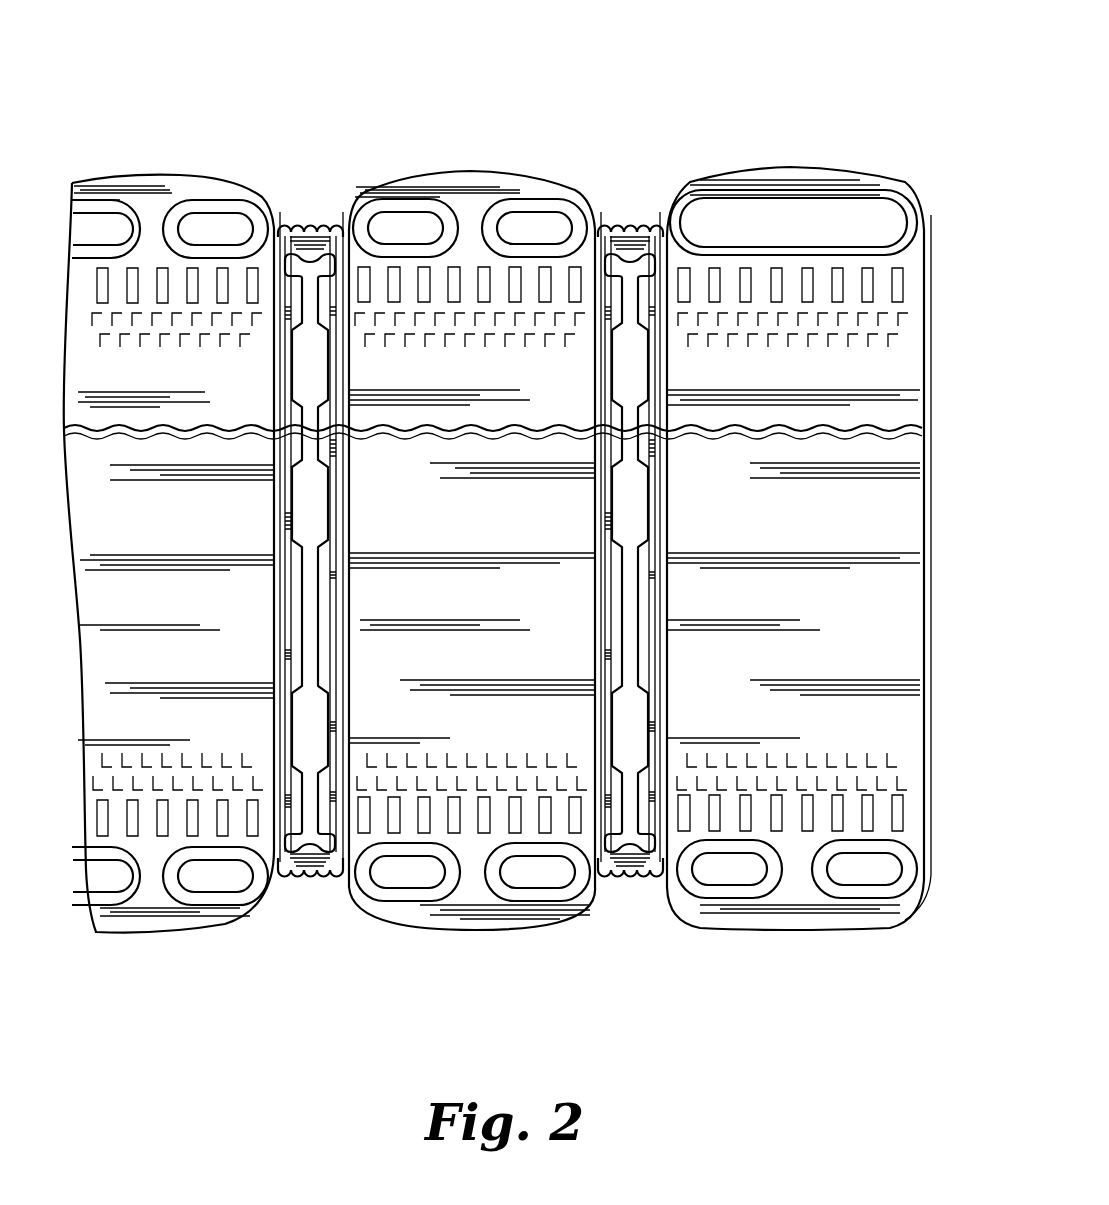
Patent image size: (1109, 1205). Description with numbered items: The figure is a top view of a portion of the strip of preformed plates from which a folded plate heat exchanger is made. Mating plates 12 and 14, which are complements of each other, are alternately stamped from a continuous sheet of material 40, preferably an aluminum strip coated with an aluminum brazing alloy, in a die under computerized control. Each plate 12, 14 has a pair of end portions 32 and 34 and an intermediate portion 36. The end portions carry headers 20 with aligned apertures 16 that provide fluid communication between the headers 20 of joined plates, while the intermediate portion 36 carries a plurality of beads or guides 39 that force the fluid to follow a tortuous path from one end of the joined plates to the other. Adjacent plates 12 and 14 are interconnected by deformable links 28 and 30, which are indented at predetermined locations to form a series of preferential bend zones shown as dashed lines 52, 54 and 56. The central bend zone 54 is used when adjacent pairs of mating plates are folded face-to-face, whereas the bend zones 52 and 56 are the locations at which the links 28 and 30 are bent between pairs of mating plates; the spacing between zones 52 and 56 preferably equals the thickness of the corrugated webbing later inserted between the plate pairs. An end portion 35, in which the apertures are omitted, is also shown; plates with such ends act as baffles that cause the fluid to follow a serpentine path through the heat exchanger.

The plate 12 is at (466, 172).
The plate 14 is at (120, 175).
The aperture 16 is at (206, 228).
The header 20 is at (185, 203).
The deformable link 28 is at (302, 228).
The deformable link 30 is at (316, 878).
The end portion 32 is at (421, 173).
The end portion 34 is at (121, 930).
The end portion 35 is at (856, 172).
The intermediate portion 36 is at (190, 525).
The beads or guides 39 is at (497, 312).
The continuous sheet of material 40 is at (722, 65).
The bend zone 52 is at (287, 228).
The bend zone 54 is at (316, 228).
The bend zone 56 is at (332, 228).